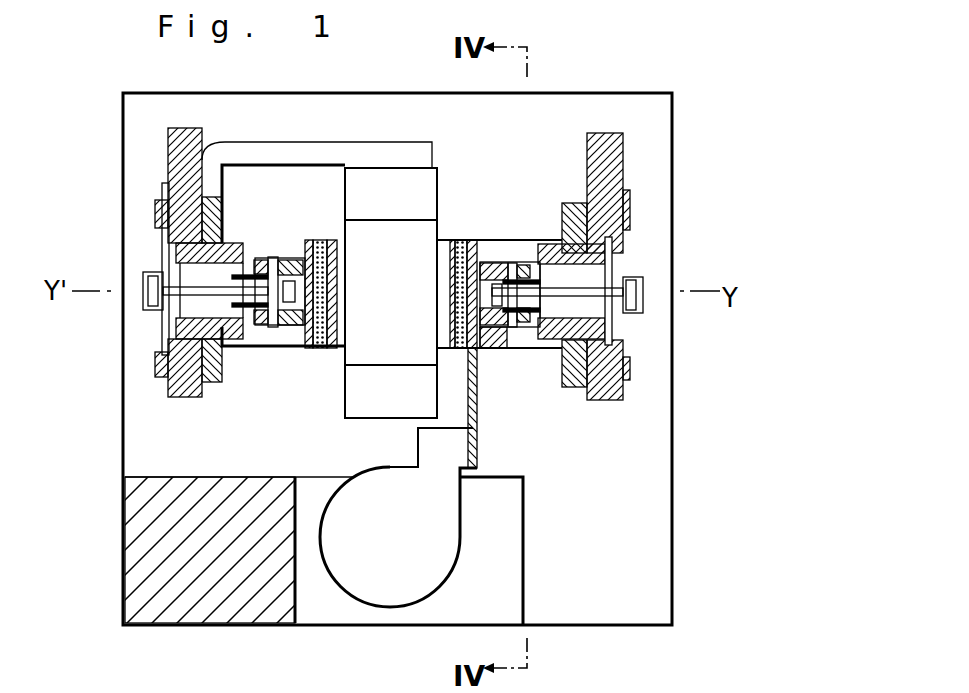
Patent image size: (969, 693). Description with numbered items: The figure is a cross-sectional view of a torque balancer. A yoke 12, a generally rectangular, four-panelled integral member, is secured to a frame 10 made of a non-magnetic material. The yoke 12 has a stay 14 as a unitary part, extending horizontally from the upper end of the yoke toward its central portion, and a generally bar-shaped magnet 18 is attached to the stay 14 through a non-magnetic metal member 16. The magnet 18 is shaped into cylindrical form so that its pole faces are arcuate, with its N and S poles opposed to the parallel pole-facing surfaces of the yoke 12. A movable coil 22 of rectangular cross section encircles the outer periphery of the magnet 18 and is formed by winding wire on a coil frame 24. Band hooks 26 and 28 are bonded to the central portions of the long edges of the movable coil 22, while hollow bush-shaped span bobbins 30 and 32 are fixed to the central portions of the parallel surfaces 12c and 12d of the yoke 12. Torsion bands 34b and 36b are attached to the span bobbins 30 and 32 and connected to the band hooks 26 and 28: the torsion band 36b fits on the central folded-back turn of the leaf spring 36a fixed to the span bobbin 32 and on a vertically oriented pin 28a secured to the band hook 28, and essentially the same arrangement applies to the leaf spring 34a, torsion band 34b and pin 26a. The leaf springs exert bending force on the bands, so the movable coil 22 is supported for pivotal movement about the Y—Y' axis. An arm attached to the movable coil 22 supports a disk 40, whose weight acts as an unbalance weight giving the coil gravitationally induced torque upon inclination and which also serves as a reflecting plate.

The frame 10 is at (125, 533).
The yoke 12 is at (565, 203).
The parallel surface 12c is at (210, 383).
The parallel surface 12d is at (577, 388).
The stay 14 is at (369, 150).
The non-magnetic metal member 16 is at (438, 183).
The magnet 18 is at (353, 348).
The movable coil 22 is at (463, 240).
The coil frame 24 is at (318, 240).
The band hook 26 is at (262, 330).
The pin 26a is at (270, 262).
The band hook 28 is at (490, 330).
The pin 28a is at (510, 330).
The span bobbin 30 is at (180, 398).
The span bobbin 32 is at (607, 400).
The leaf spring 34a is at (143, 312).
The torsion band 34b is at (190, 282).
The leaf spring 36a is at (640, 315).
The torsion band 36b is at (583, 290).
The disk 40 is at (392, 592).